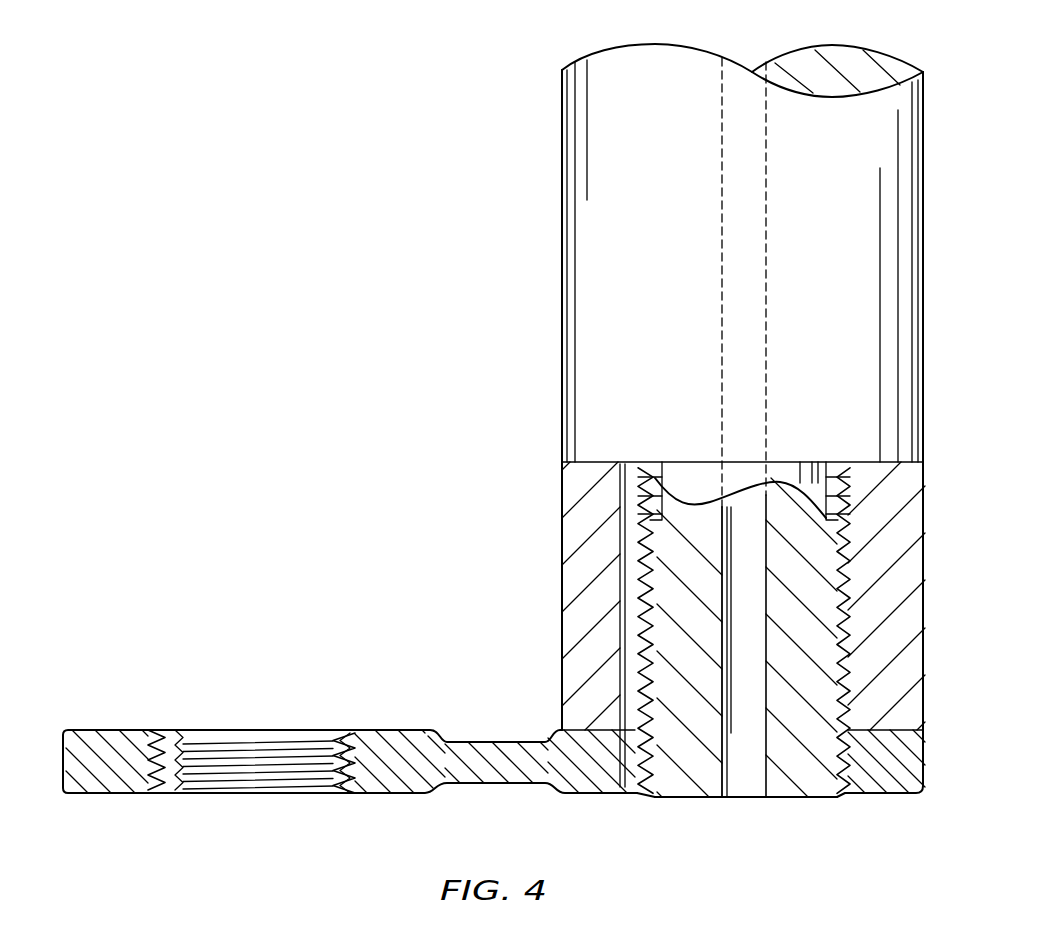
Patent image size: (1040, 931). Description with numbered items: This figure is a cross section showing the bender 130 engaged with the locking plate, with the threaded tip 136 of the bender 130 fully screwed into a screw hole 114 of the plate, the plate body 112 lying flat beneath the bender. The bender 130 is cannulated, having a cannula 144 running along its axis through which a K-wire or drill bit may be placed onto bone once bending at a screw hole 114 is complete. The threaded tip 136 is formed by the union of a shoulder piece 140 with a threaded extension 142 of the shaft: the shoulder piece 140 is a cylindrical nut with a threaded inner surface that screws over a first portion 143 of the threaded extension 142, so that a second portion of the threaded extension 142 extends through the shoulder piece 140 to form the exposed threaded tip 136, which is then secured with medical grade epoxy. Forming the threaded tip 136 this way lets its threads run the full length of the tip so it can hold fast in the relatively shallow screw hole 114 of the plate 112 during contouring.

The bar 112 is at (483, 783).
The screw hole 114 is at (250, 755).
The bender 130 is at (939, 240).
The threaded tip 136 is at (627, 761).
The shoulder piece 140 is at (927, 690).
The threaded extension 142 is at (816, 598).
The first portion 143 is at (627, 596).
The cannula 144 is at (763, 780).